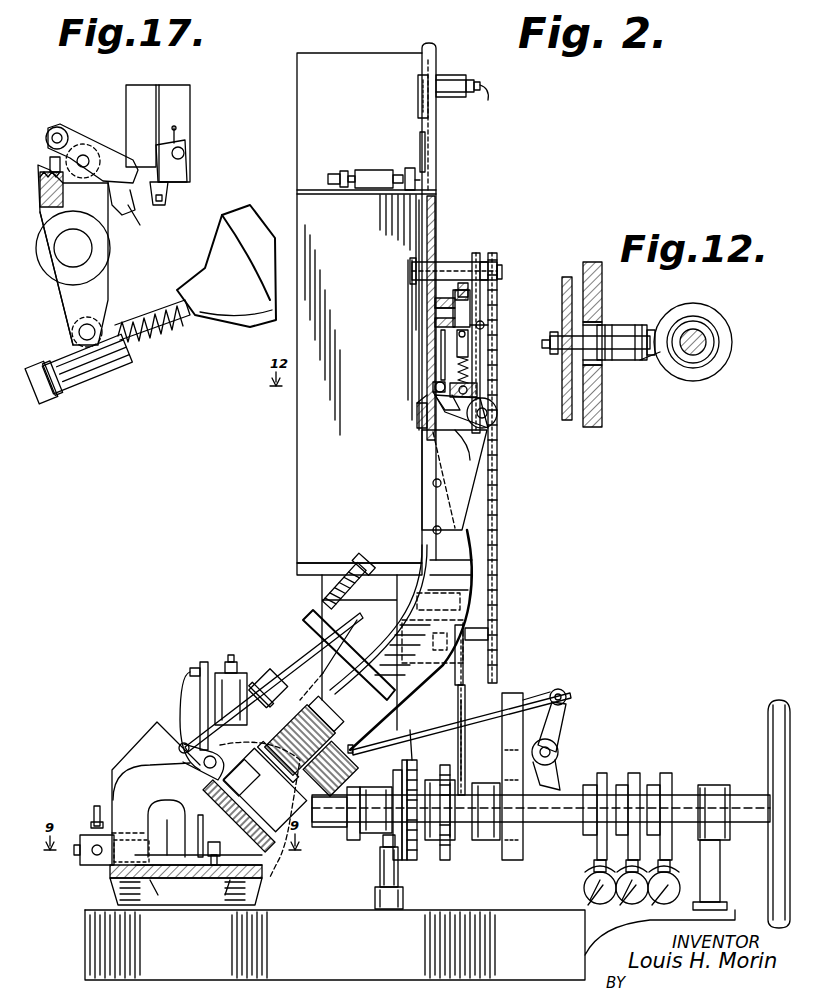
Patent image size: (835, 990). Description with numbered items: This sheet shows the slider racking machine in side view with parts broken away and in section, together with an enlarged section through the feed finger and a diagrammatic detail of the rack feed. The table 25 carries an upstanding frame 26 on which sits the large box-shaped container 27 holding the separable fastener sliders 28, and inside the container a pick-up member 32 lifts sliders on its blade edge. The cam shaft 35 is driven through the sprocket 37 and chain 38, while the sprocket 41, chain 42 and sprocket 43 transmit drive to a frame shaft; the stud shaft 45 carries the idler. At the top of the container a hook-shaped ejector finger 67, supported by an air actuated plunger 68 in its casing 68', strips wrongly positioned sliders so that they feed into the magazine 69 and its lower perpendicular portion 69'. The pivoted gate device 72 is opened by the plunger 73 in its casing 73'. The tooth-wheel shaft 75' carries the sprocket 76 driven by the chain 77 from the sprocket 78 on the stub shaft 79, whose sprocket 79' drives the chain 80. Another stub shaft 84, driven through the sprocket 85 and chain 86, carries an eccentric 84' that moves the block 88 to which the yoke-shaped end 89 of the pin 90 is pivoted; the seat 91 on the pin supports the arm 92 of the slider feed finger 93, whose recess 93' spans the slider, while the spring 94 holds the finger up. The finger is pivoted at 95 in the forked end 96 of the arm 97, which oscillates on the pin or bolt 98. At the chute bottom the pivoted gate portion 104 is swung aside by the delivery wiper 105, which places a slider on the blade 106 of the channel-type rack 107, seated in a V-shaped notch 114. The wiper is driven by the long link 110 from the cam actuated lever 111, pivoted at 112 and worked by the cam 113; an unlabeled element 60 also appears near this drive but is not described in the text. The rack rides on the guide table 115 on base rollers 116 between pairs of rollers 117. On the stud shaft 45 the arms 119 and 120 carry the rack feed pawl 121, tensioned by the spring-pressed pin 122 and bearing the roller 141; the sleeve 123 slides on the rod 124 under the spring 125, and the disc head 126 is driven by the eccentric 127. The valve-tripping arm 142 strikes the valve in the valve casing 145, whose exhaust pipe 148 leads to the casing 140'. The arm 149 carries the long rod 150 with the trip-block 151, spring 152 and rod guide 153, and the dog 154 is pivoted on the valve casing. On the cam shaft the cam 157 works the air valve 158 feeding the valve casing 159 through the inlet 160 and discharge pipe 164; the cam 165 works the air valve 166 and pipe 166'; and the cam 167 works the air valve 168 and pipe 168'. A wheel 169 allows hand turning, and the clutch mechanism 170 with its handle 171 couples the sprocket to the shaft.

In FIG. 2, the table 25 is at (100, 942).
In FIG. 2, the upstanding frame 26 is at (322, 585).
In FIG. 2, the box-shaped container 27 is at (297, 484).
In FIG. 12, the separable fastener slider 28 is at (521, 392).
In FIG. 2, the separable fastener slider 28 is at (420, 425).
In FIG. 2, the slider pick-up member 32 is at (420, 135).
In FIG. 2, the cam shaft 35 is at (685, 795).
In FIG. 2, the sprocket 37 is at (455, 780).
In FIG. 2, the chain 38 is at (452, 860).
In FIG. 2, the sprocket 41 is at (406, 734).
In FIG. 2, the chain 42 is at (396, 770).
In FIG. 2, the sprocket 43 is at (412, 768).
In FIG. 17, the stud shaft 45 is at (95, 250).
In FIG. 2, the rod 60 is at (466, 756).
In FIG. 2, the hook-shaped ejector finger 67 is at (418, 95).
In FIG. 2, the air actuated plunger 68 is at (429, 288).
In FIG. 2, the plunger casing 68' is at (465, 65).
In FIG. 12, the magazine 69 is at (578, 341).
In FIG. 17, the lower perpendicular portion of magazine 69' is at (176, 133).
In FIG. 2, the lower perpendicular portion of magazine 69' is at (408, 590).
In FIG. 2, the pivoted gate device 72 is at (422, 176).
In FIG. 2, the air actuated plunger 73 is at (405, 163).
In FIG. 2, the plunger casing 73' is at (379, 159).
In FIG. 2, the shaft 75' is at (519, 250).
In FIG. 2, the sprocket 76 is at (486, 255).
In FIG. 2, the chain 77 is at (497, 522).
In FIG. 2, the sprocket 78 is at (497, 660).
In FIG. 2, the stub shaft 79 is at (501, 629).
In FIG. 2, the sprocket 79' is at (468, 628).
In FIG. 2, the chain 80 is at (478, 700).
In FIG. 2, the stub shaft 84 is at (397, 313).
In FIG. 2, the eccentric 84' is at (400, 290).
In FIG. 2, the sprocket 85 is at (484, 325).
In FIG. 2, the chain 86 is at (482, 292).
In FIG. 2, the block 88 is at (462, 283).
In FIG. 2, the yoke-shaped end 89 is at (468, 346).
In FIG. 12, the pin 90 is at (705, 340).
In FIG. 2, the pin 90 is at (468, 372).
In FIG. 2, the seat 91 is at (495, 430).
In FIG. 12, the arm 92 is at (705, 360).
In FIG. 2, the arm 92 is at (479, 392).
In FIG. 12, the slider feed finger 93 is at (611, 314).
In FIG. 2, the slider feed finger 93 is at (408, 398).
In FIG. 12, the recess 93' is at (604, 325).
In FIG. 2, the spring 94 is at (441, 360).
In FIG. 12, the pivot 95 is at (612, 362).
In FIG. 2, the pivot 95 is at (435, 386).
In FIG. 12, the forked end 96 is at (612, 328).
In FIG. 12, the arm 97 is at (640, 362).
In FIG. 2, the arm 97 is at (482, 455).
In FIG. 2, the pin or bolt 98 is at (497, 412).
In FIG. 17, the pivoted gate portion 104 is at (188, 153).
In FIG. 2, the delivery wiper 105 is at (330, 769).
In FIG. 17, the blade 106 is at (170, 200).
In FIG. 2, the blade 106 is at (227, 844).
In FIG. 2, the channel-type rack 107 is at (170, 845).
In FIG. 2, the long link 110 is at (430, 733).
In FIG. 2, the cam actuated lever 111 is at (560, 720).
In FIG. 2, the pivot 112 is at (558, 745).
In FIG. 2, the cam 113 is at (523, 770).
In FIG. 17, the V-shaped notch 114 is at (135, 207).
In FIG. 2, the rack guide and supporting table 115 is at (215, 880).
In FIG. 2, the base roller 116 is at (180, 880).
In FIG. 2, the roller 117 is at (150, 890).
In FIG. 17, the arm 119 is at (73, 255).
In FIG. 17, the arm 120 is at (103, 295).
In FIG. 17, the rack feed pawl 121 is at (76, 138).
In FIG. 17, the spring-pressed pin 122 is at (42, 185).
In FIG. 17, the sleeve 123 is at (115, 370).
In FIG. 2, the sleeve 123 is at (400, 908).
In FIG. 17, the rod 124 is at (150, 340).
In FIG. 2, the rod 124 is at (378, 852).
In FIG. 17, the spring 125 is at (160, 345).
In FIG. 2, the spring 125 is at (412, 860).
In FIG. 17, the disc head 126 is at (258, 318).
In FIG. 2, the disc head 126 is at (360, 830).
In FIG. 17, the eccentric 127 is at (252, 250).
In FIG. 2, the plunger casing 140' is at (194, 684).
In FIG. 17, the roller 141 is at (57, 127).
In FIG. 2, the valve-tripping arm 142 is at (188, 672).
In FIG. 2, the valve casing 145 is at (325, 745).
In FIG. 2, the exhaust pipe 148 is at (232, 662).
In FIG. 2, the arm 149 is at (178, 752).
In FIG. 2, the long rod 150 is at (308, 625).
In FIG. 2, the trip-block 151 is at (262, 660).
In FIG. 2, the spring 152 is at (345, 592).
In FIG. 2, the rod guide 153 is at (352, 652).
In FIG. 2, the catch device or dog 154 is at (283, 688).
In FIG. 2, the cam 157 is at (603, 773).
In FIG. 2, the air valve 158 is at (595, 905).
In FIG. 2, the valve casing 159 is at (80, 860).
In FIG. 2, the air inlet 160 is at (97, 857).
In FIG. 2, the discharge pipe 164 is at (92, 810).
In FIG. 2, the cam 165 is at (634, 773).
In FIG. 2, the air valve 166 is at (587, 909).
In FIG. 2, the pipe 166' is at (473, 534).
In FIG. 2, the cam 167 is at (666, 773).
In FIG. 2, the air valve 168 is at (673, 885).
In FIG. 2, the pipe 168' is at (623, 479).
In FIG. 2, the wheel 169 is at (779, 705).
In FIG. 2, the clutch mechanism 170 is at (485, 840).
In FIG. 2, the handle 171 is at (544, 688).